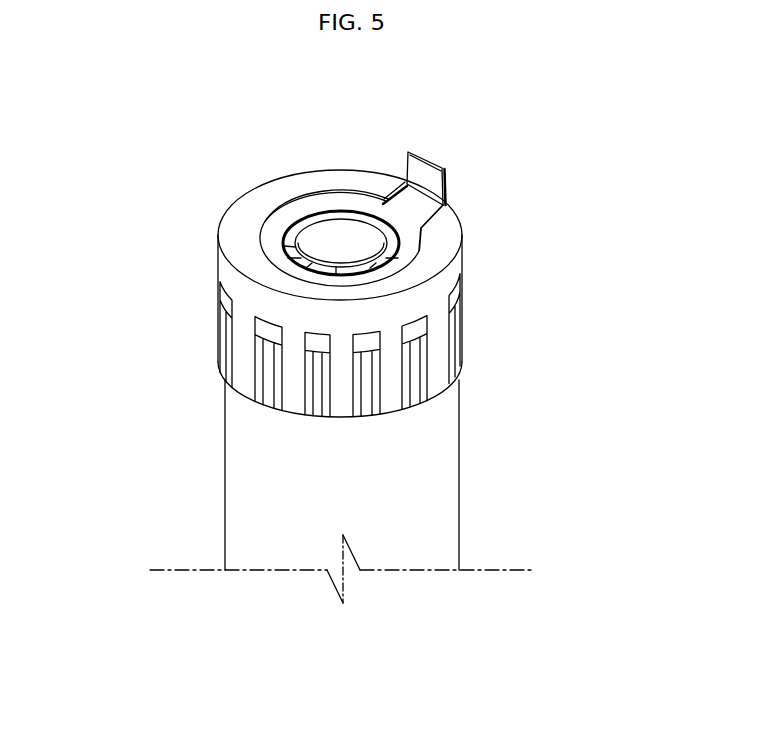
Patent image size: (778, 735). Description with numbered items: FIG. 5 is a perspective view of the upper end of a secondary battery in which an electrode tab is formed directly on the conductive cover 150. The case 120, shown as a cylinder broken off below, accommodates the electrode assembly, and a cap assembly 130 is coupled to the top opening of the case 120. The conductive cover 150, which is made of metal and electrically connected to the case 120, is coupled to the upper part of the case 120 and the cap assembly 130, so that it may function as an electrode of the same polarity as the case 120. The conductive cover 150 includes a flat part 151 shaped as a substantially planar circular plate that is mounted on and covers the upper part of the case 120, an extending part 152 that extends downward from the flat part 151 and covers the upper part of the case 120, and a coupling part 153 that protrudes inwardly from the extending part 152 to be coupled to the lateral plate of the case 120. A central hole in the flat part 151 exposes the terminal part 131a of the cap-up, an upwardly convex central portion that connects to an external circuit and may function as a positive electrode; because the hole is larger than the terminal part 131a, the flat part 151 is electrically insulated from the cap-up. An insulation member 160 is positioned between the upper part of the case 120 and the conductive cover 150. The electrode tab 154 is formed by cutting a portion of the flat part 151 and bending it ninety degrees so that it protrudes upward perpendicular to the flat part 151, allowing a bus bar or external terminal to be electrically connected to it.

The case 120 is at (461, 460).
The cap assembly 130 is at (297, 222).
The terminal part 131a is at (338, 238).
The conductive cover 150 is at (356, 253).
The flat part 151 is at (357, 178).
The extending part 152 is at (456, 272).
The coupling part 153 is at (410, 358).
The electrode tab 154 is at (423, 170).
The insulation member 160 is at (268, 228).